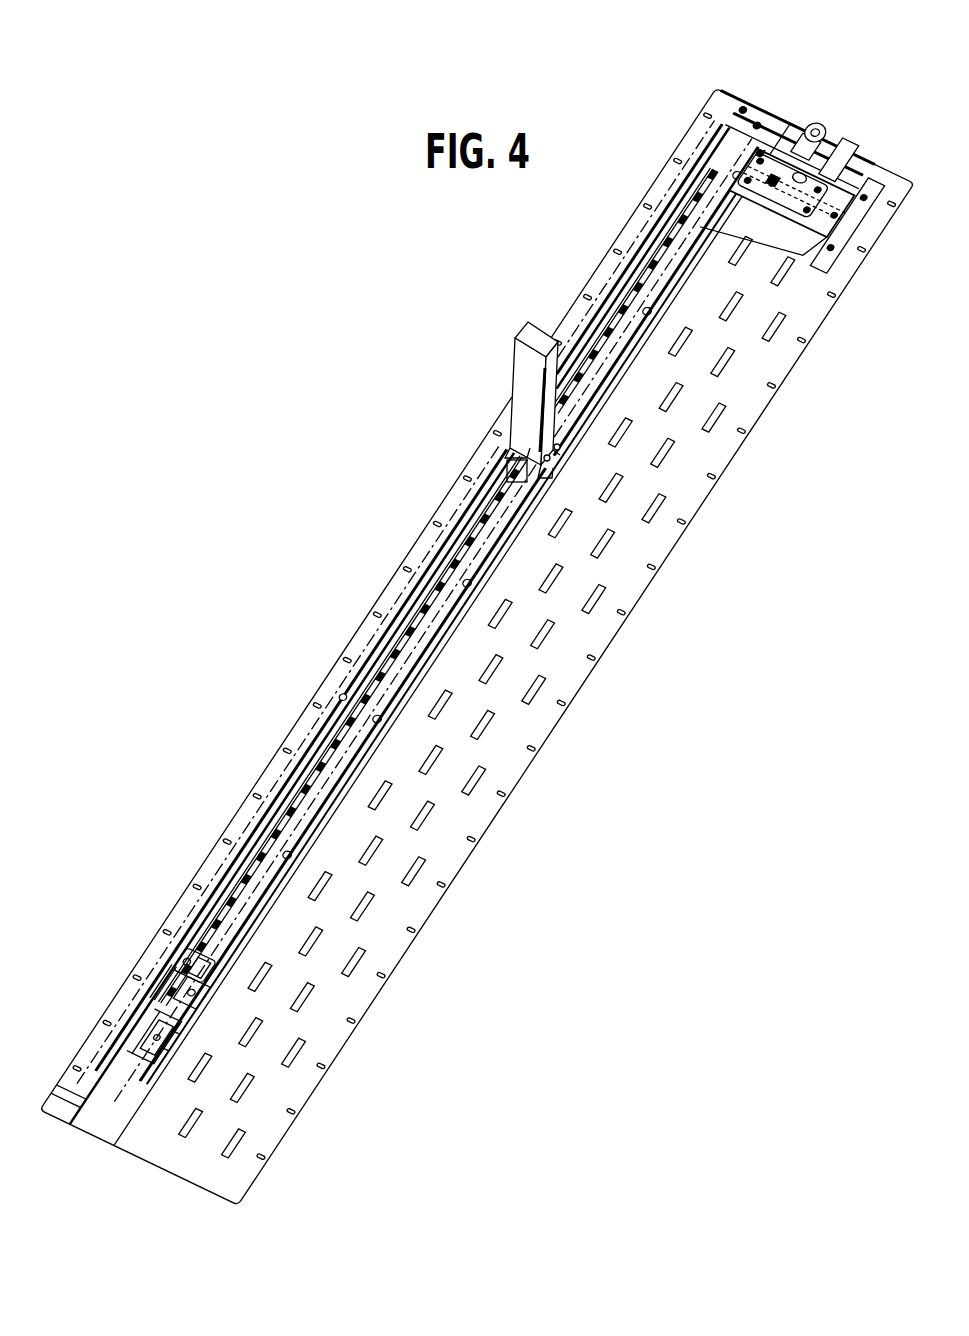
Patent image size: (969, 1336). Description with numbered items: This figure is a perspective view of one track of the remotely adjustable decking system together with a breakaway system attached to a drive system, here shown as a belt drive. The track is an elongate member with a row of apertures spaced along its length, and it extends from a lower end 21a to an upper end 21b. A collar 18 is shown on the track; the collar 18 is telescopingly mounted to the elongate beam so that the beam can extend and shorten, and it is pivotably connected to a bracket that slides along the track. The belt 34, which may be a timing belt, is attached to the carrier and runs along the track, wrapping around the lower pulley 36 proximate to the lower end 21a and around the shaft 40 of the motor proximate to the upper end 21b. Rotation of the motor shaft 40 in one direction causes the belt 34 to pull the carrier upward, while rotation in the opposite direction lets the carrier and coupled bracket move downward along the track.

The collar 18 is at (522, 371).
The lower end of the track 21a is at (95, 1132).
The upper end of the track 21b is at (716, 92).
The belt 34 is at (577, 438).
The lower pulley 36 is at (188, 957).
The shaft of a motor 40 is at (823, 122).